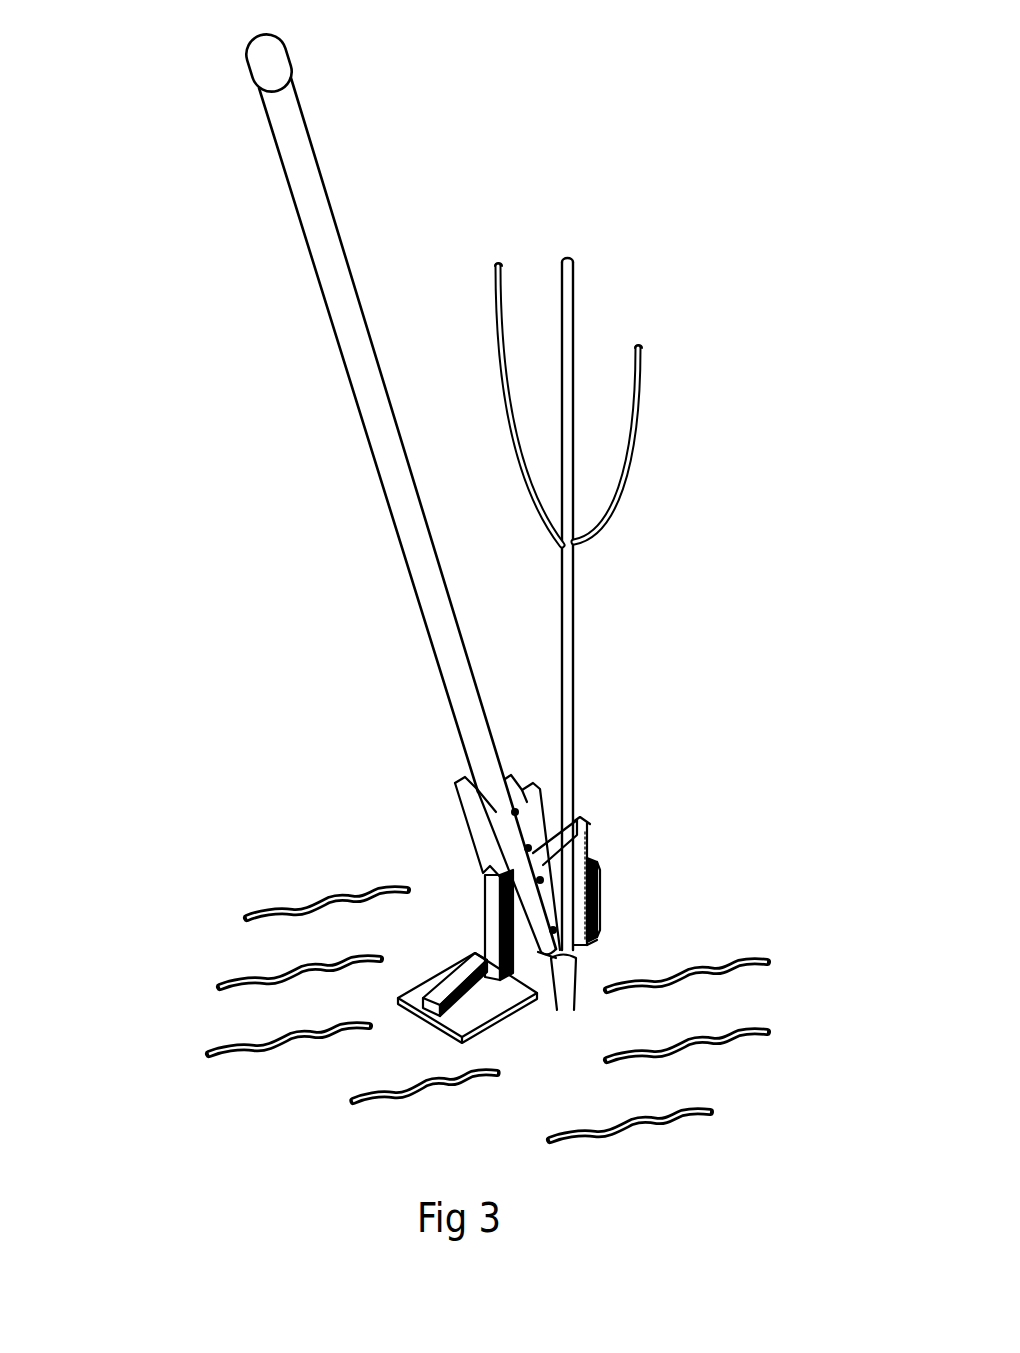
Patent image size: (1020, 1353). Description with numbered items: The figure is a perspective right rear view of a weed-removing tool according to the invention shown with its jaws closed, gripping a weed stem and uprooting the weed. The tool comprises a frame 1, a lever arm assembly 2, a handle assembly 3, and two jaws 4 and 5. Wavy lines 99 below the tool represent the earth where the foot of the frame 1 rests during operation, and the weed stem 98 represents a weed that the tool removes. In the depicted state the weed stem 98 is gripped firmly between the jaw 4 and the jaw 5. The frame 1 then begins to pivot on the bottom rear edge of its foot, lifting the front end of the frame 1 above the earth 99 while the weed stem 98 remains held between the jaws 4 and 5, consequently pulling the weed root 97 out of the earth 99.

The frame 1 is at (438, 1027).
The lever arm assembly 2 is at (455, 797).
The handle assembly 3 is at (304, 240).
The jaw 4 is at (600, 890).
The jaw 5 is at (546, 963).
The weed root 97 is at (587, 967).
The weed stem 98 is at (576, 633).
The earth 99 is at (222, 1042).